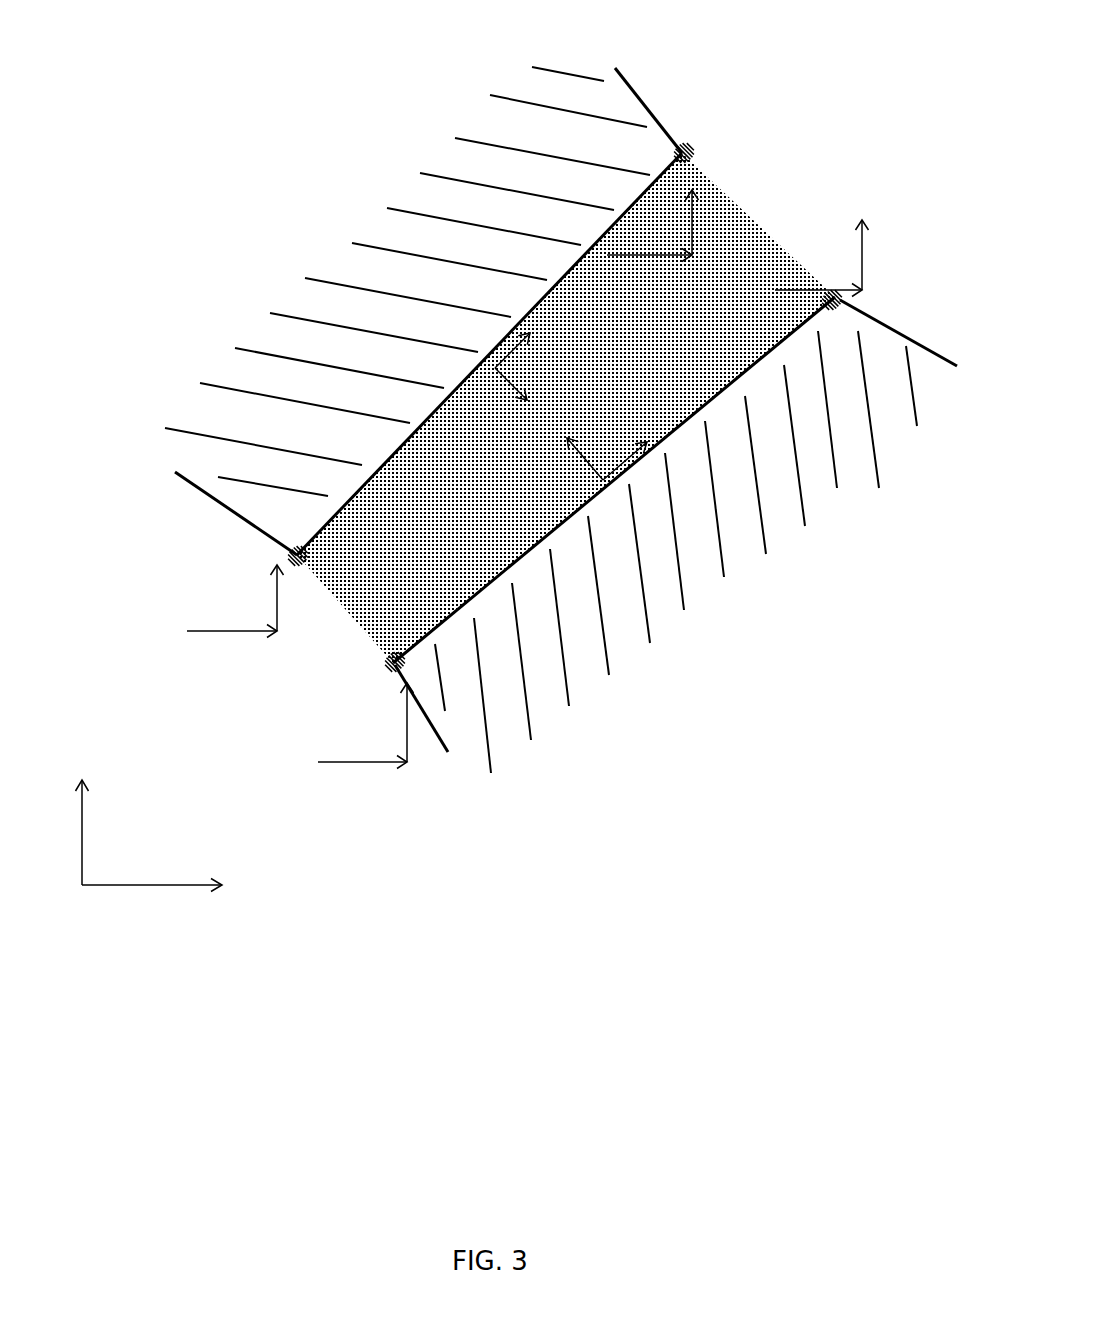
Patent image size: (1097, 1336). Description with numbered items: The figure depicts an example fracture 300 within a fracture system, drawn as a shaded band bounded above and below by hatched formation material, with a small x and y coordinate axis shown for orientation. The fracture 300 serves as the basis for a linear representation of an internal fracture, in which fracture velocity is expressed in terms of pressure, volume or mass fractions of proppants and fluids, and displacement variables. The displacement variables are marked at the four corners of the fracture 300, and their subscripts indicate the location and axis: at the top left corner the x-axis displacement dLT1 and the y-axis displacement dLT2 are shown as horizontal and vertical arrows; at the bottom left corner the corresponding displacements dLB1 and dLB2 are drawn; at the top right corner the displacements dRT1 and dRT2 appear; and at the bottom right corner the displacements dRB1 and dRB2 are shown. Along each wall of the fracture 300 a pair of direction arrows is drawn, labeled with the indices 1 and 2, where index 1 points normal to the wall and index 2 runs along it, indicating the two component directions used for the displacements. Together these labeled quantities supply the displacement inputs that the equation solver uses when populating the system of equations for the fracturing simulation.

The fracture 300 is at (191, 188).
The first direction vectors n1, m1 (normal to wall surfaces) 1 is at (541, 424).
The second direction vectors n2, m2 (along wall surfaces) 2 is at (571, 404).
The right-top x-axis displacement dRT1 is at (649, 240).
The right-top y-axis displacement dRT2 is at (724, 222).
The right-bottom x-axis displacement dRB1 is at (816, 270).
The right-bottom y-axis displacement dRB2 is at (898, 255).
The left-top x-axis displacement dLT1 is at (229, 607).
The left-top y-axis displacement dLT2 is at (309, 598).
The left-bottom x-axis displacement dLB1 is at (362, 786).
The left-bottom y-axis displacement dLB2 is at (375, 722).